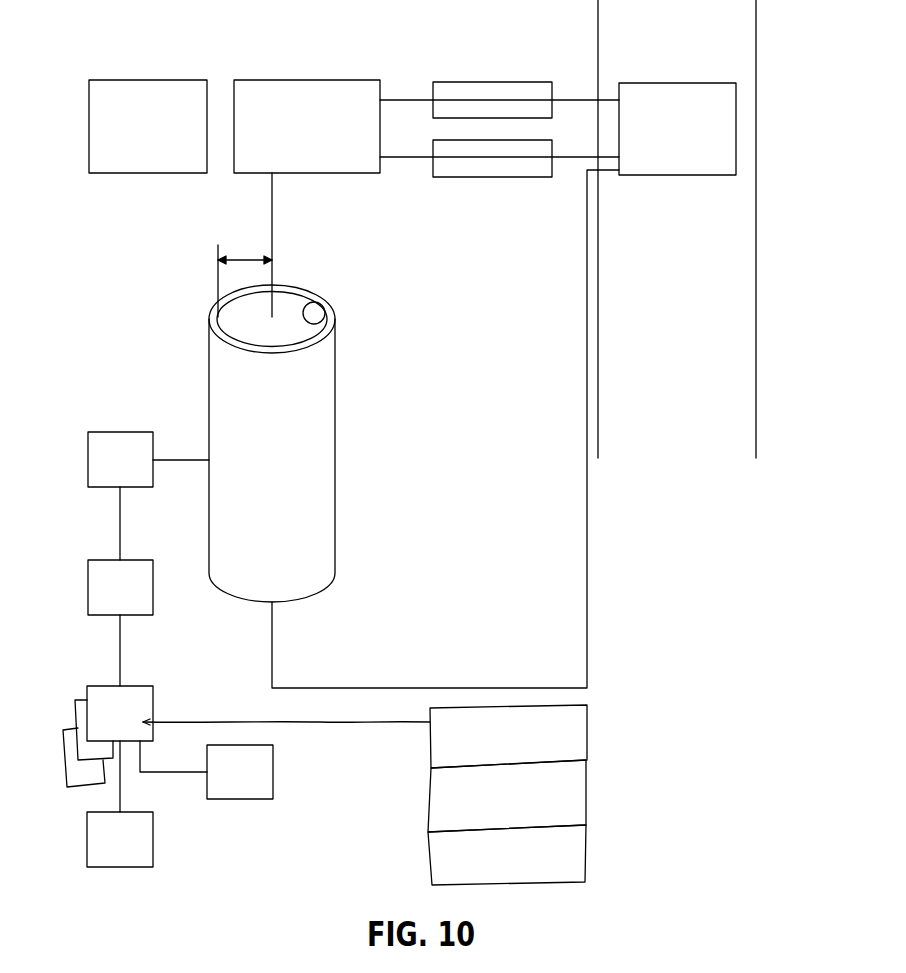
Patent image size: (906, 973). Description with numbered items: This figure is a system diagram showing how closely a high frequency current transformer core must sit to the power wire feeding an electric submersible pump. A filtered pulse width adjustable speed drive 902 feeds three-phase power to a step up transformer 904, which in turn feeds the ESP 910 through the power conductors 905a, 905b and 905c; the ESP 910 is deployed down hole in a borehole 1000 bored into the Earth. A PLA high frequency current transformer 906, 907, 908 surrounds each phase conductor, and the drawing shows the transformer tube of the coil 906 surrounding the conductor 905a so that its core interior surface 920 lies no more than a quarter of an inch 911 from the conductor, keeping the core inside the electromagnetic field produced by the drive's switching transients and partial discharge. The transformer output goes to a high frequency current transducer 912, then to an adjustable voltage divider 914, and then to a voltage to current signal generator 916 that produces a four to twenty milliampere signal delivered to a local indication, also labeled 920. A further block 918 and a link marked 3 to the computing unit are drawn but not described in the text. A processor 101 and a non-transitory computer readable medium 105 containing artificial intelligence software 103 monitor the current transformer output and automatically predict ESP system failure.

The filtered pulse width adjustable speed drive (FPWM ASD) 902 is at (152, 80).
The step up transformer 904 is at (306, 80).
The power conductor 905a is at (272, 233).
The power conductor 905b is at (397, 100).
The power conductor 905c is at (396, 157).
The high frequency current transformer 907 is at (498, 82).
The high frequency current transformer 908 is at (490, 177).
The ESP 910 is at (670, 175).
The borehole 1000 is at (755, 302).
The distance from power conductor 911 is at (248, 260).
The high frequency current transformer coil 906 is at (316, 452).
The interior surface 920 is at (328, 316).
The high frequency current transducer 912 is at (120, 432).
The adjustable voltage divider 914 is at (153, 605).
The voltage to current signal generator 916 is at (153, 710).
The component box 918 is at (273, 775).
The connection 3 is at (340, 750).
The artificial intelligence software 103 is at (572, 740).
The processor 101 is at (565, 801).
The non-transitory computer readable medium 105 is at (570, 856).